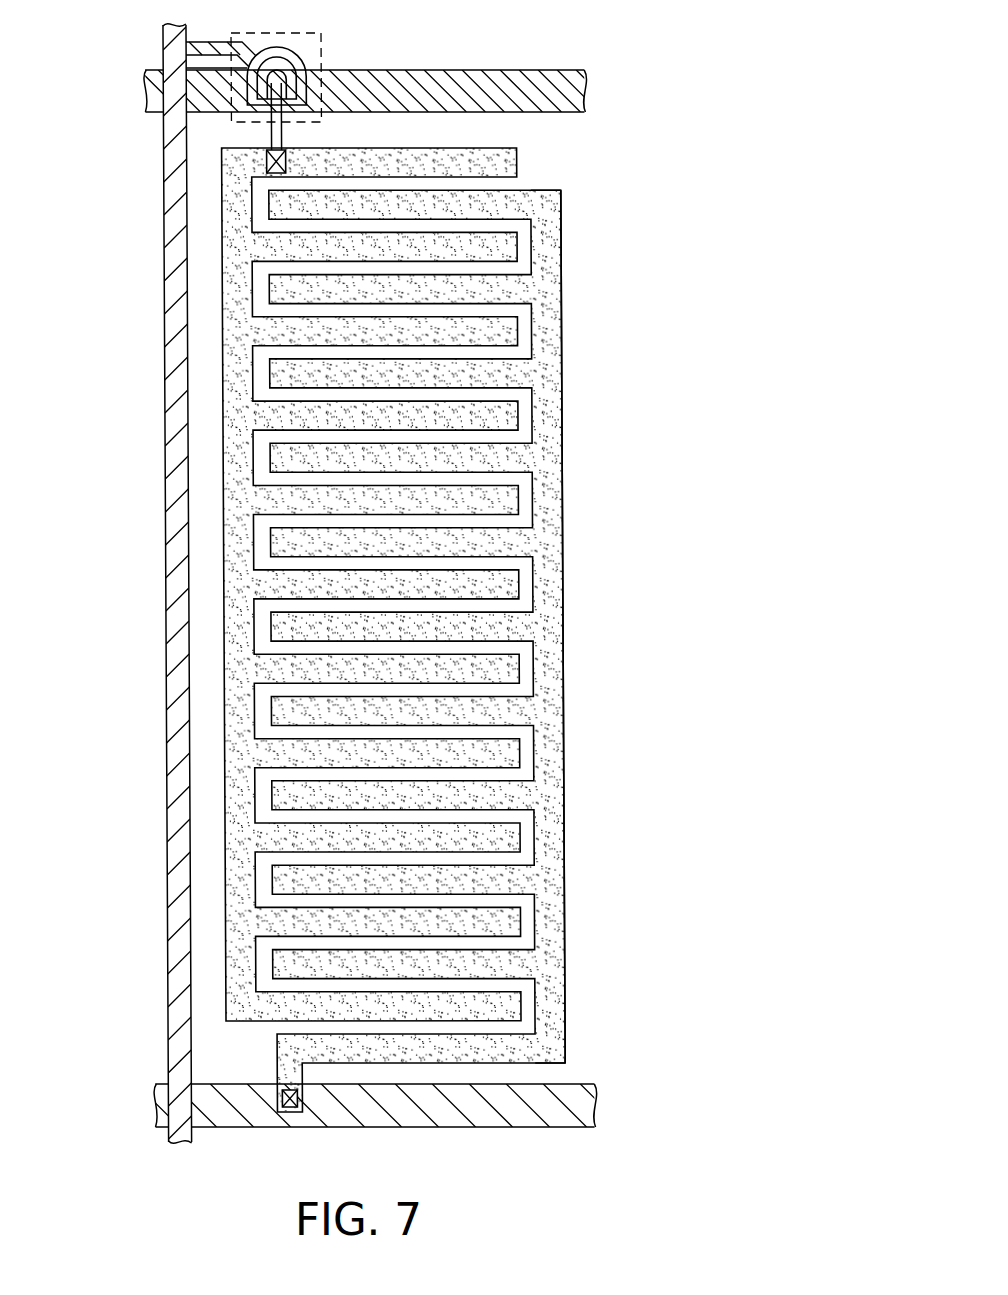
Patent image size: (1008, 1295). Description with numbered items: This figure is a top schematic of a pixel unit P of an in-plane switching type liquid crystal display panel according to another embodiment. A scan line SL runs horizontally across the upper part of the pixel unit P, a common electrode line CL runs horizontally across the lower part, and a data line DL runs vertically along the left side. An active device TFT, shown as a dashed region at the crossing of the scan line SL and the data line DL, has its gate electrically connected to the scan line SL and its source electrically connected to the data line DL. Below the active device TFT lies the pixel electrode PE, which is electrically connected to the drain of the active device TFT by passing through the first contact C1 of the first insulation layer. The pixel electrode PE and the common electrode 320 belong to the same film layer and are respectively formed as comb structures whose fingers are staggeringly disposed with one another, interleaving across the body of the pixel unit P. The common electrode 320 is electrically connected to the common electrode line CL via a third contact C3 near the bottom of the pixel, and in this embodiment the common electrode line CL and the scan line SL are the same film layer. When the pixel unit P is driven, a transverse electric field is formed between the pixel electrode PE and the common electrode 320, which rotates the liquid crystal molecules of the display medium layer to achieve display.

The data line DL is at (177, 45).
The active device TFT is at (324, 52).
The scan line SL is at (575, 85).
The first contact C1 is at (267, 160).
The pixel electrode PE is at (427, 620).
The common electrode 320 is at (550, 292).
The common electrode line CL is at (580, 1100).
The third contact C3 is at (287, 1105).
The pixel unit P is at (376, 603).